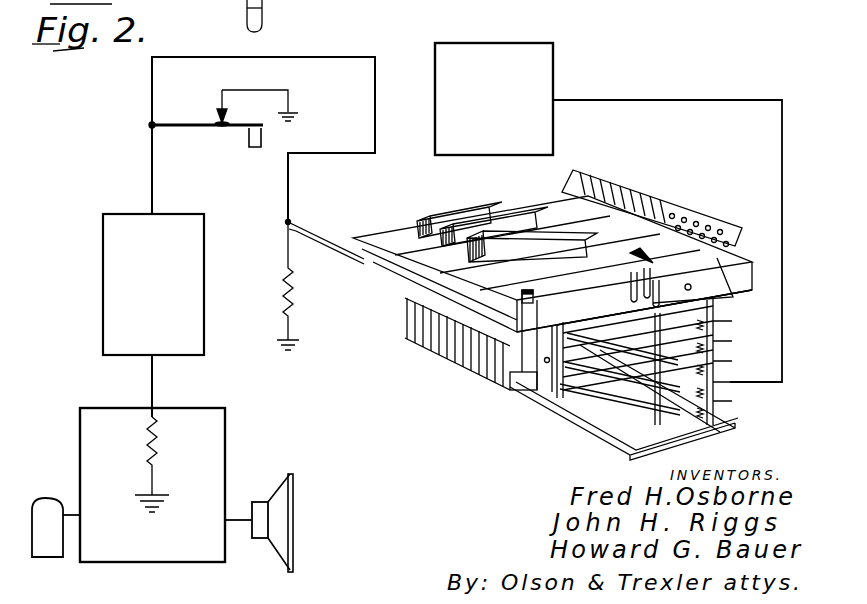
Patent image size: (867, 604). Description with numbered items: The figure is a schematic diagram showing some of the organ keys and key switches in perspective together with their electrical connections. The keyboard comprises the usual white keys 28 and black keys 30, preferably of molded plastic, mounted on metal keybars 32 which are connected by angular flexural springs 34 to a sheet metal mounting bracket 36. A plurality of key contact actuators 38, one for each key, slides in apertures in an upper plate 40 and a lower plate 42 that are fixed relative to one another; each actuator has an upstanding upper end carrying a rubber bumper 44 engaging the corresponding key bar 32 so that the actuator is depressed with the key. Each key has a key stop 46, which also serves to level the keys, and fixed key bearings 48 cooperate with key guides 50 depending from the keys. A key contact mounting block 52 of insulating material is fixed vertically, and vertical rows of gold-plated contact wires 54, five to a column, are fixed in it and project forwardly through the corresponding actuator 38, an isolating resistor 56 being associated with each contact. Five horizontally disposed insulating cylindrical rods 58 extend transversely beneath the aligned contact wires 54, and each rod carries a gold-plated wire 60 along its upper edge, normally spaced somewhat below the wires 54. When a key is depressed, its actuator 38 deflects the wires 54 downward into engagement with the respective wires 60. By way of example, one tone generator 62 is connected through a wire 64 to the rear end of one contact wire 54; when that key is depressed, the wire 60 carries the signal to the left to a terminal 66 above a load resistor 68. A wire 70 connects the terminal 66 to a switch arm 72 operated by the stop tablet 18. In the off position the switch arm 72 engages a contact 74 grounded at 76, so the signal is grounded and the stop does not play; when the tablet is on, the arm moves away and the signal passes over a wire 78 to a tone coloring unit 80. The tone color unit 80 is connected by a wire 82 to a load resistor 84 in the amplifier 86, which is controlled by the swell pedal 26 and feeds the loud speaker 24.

The stop tablet 18 is at (252, 149).
The loud speaker 24 is at (282, 518).
The swell pedal 26 is at (48, 548).
The white keys 28 is at (444, 276).
The black keys 30 is at (483, 227).
The keybars 32 is at (693, 253).
The angular flexural springs 34 is at (727, 228).
The sheet metal mounting bracket 36 is at (720, 262).
The key contact actuators 38 is at (690, 318).
The upper plate 40 is at (588, 300).
The lower plate 42 is at (580, 412).
The rubber bumper 44 is at (636, 284).
The key stop 46 is at (522, 299).
The key bearings 48 is at (526, 362).
The key guides 50 is at (510, 345).
The key contact mounting block 52 is at (713, 393).
The contact wires 54 is at (633, 372).
The isolating resistor 56 is at (720, 327).
The insulating cylindrical rods 58 is at (335, 257).
The gold-plated wire 60 is at (325, 238).
The tone generator 62 is at (543, 58).
The wire 64 is at (737, 101).
The terminal 66 is at (288, 222).
The load resistor 68 is at (295, 294).
The wire 70 is at (352, 57).
The switch arm 72 is at (196, 128).
The contact 74 is at (216, 118).
The ground 76 is at (293, 109).
The wire 78 is at (152, 175).
The tone coloring unit 80 is at (113, 242).
The wire 82 is at (152, 380).
The load resistor 84 is at (147, 423).
The amplifier 86 is at (217, 550).